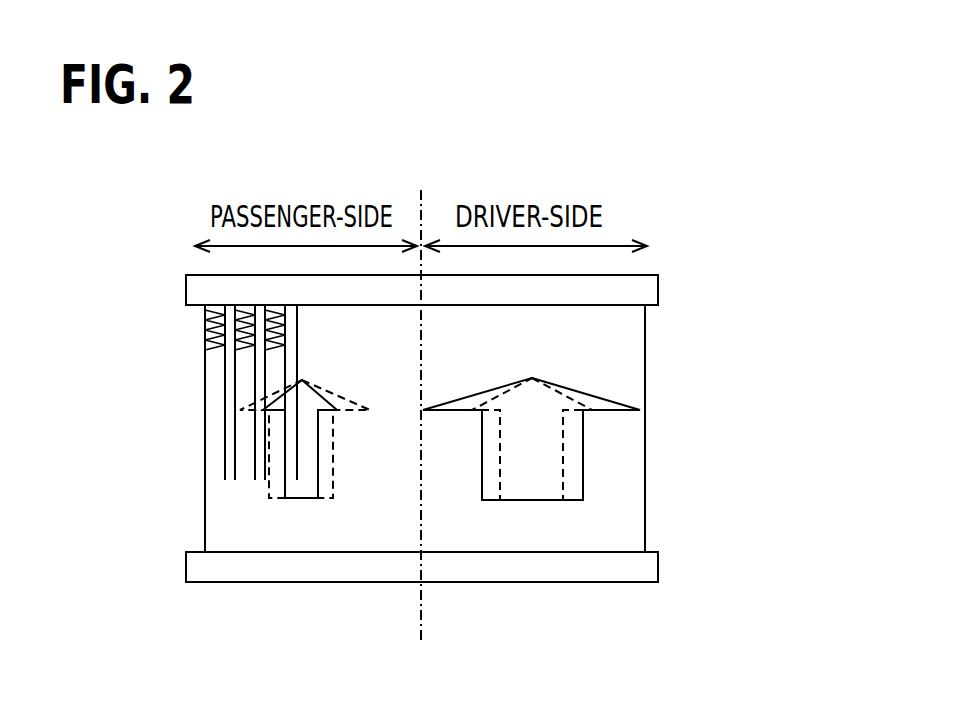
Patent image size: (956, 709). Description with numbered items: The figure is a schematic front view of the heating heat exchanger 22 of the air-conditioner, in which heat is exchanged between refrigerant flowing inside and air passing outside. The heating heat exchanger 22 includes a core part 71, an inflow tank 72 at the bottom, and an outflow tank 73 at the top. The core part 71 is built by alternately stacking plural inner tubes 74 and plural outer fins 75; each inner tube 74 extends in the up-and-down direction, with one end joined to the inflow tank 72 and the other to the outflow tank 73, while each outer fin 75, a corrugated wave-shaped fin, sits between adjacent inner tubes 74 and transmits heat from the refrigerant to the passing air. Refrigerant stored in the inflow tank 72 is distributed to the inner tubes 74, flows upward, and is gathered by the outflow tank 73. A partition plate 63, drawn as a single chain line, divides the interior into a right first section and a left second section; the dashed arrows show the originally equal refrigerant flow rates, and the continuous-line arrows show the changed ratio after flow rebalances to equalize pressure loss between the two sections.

The heating heat exchanger 22 is at (715, 320).
The partition plate 63 is at (418, 610).
The core part 71 is at (630, 477).
The inflow tank 72 is at (615, 568).
The outflow tank 73 is at (645, 293).
The inner tube 74 is at (228, 376).
The outer fin 75 is at (207, 334).